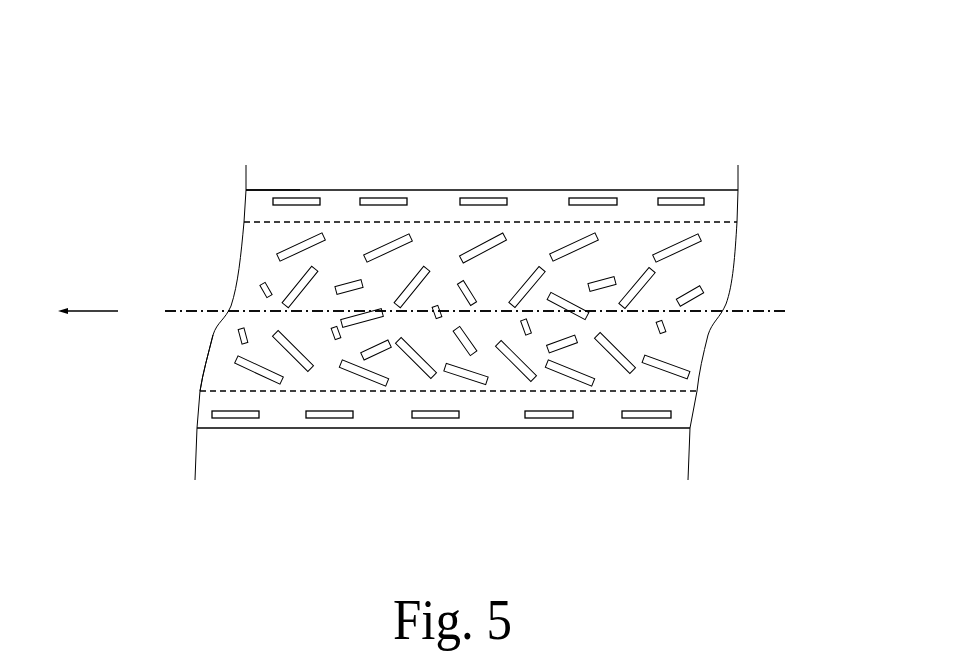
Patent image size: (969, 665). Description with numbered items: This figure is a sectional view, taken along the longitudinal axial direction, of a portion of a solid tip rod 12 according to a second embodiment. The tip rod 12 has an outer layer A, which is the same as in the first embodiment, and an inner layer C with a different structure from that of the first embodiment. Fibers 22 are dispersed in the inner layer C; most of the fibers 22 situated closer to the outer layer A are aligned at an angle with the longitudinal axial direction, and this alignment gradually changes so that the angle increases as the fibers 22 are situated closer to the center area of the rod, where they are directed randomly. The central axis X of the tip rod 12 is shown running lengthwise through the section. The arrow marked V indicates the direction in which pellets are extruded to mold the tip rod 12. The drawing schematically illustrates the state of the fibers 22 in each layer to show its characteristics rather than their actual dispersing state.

The tip rod 12 is at (636, 133).
The fibers 22 is at (485, 193).
The outer layer A is at (250, 202).
The inner layer C is at (218, 360).
The extrusion direction V is at (83, 292).
The central axis X is at (815, 302).